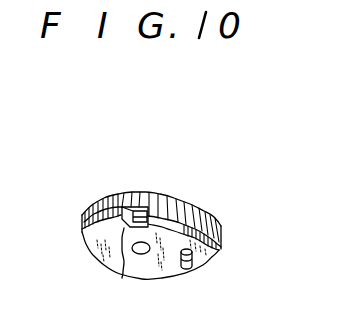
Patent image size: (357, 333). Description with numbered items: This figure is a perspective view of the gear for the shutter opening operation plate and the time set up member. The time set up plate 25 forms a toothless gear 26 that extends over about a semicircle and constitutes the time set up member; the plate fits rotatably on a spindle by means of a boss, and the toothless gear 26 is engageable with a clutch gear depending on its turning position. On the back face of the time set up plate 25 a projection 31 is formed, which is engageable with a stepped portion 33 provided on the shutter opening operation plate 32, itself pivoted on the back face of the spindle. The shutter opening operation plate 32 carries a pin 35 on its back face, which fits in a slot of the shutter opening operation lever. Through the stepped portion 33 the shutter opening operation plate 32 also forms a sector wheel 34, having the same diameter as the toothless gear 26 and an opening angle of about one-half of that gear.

The time set up plate 25 is at (221, 243).
The toothless gear 26 is at (195, 206).
The projection 31 is at (147, 208).
The shutter opening operation plate 32 is at (88, 248).
The stepped portion 33 is at (121, 279).
The sector wheel 34 is at (82, 228).
The pin 35 is at (193, 259).